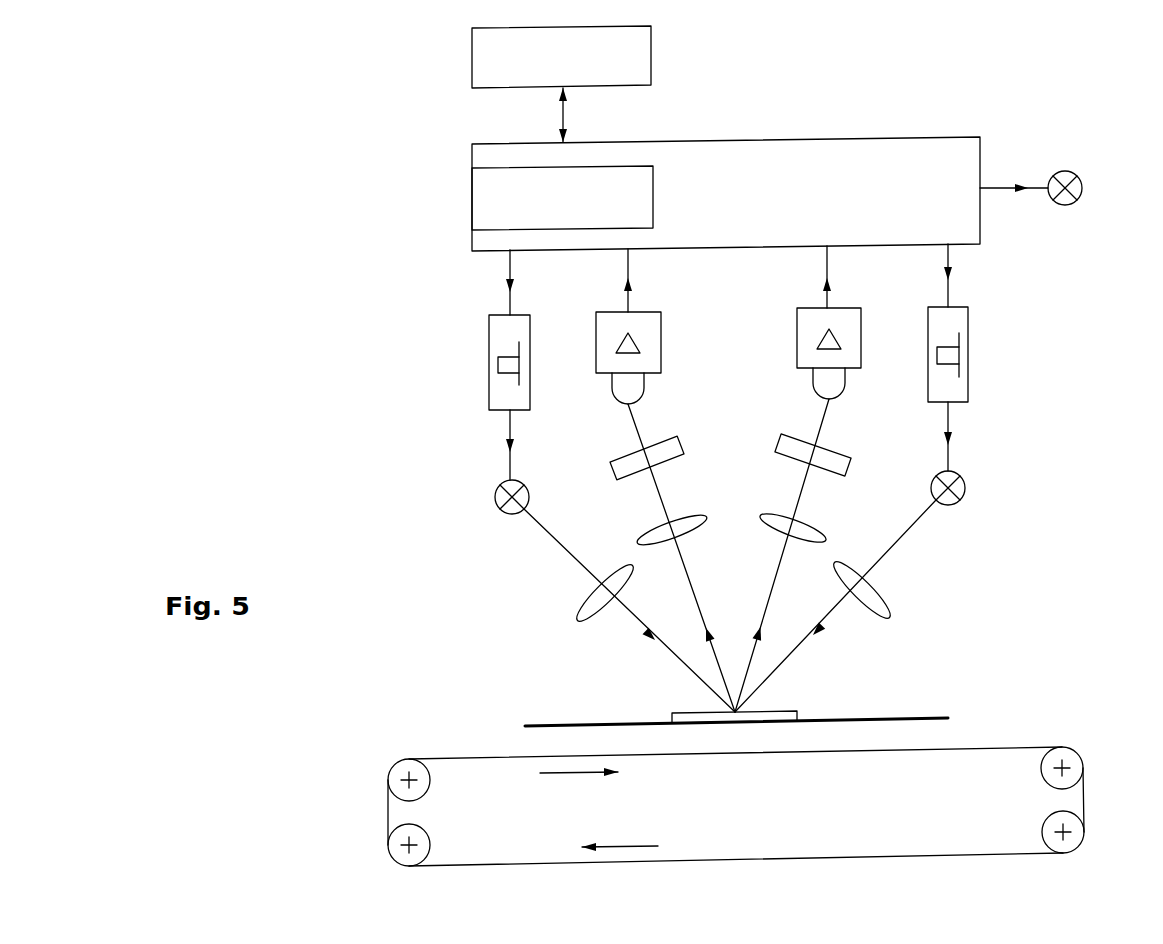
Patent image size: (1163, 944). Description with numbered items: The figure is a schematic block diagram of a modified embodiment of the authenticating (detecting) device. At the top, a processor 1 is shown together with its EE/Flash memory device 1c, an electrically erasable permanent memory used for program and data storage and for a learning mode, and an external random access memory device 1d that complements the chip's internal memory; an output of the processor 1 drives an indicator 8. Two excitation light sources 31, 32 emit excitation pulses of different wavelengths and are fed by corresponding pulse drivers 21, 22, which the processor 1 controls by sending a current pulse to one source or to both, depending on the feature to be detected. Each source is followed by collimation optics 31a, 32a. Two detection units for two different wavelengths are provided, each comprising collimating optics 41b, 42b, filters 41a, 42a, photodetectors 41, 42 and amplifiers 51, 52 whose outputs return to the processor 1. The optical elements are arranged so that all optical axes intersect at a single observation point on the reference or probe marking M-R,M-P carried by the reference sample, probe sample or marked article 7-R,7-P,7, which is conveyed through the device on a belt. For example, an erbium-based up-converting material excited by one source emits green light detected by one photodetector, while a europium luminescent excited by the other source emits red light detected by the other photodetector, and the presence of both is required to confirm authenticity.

The processor 1 is at (883, 152).
The EE/Flash memory device (Mem) 1c is at (483, 202).
The random access memory device (RAM) 1d is at (642, 58).
The indicator lamp 8 is at (1083, 188).
The pulse driver 21 is at (497, 337).
The pulse driver 22 is at (963, 320).
The excitation light source 31 is at (495, 493).
The excitation light source 32 is at (966, 490).
The collimation optics 31a is at (592, 600).
The collimation optics 32a is at (875, 598).
The photodetector 41 is at (626, 387).
The photodetector 42 is at (838, 384).
The filter 41a is at (667, 447).
The filter 42a is at (791, 444).
The collimating optics 41b is at (660, 529).
The collimating optics 42b is at (803, 526).
The amplifier 51 is at (656, 330).
The amplifier 52 is at (801, 322).
The reference marking and probe marking M-R,M-P is at (683, 712).
The reference sample, probe sample and article 7-R,7-P,7 is at (940, 718).